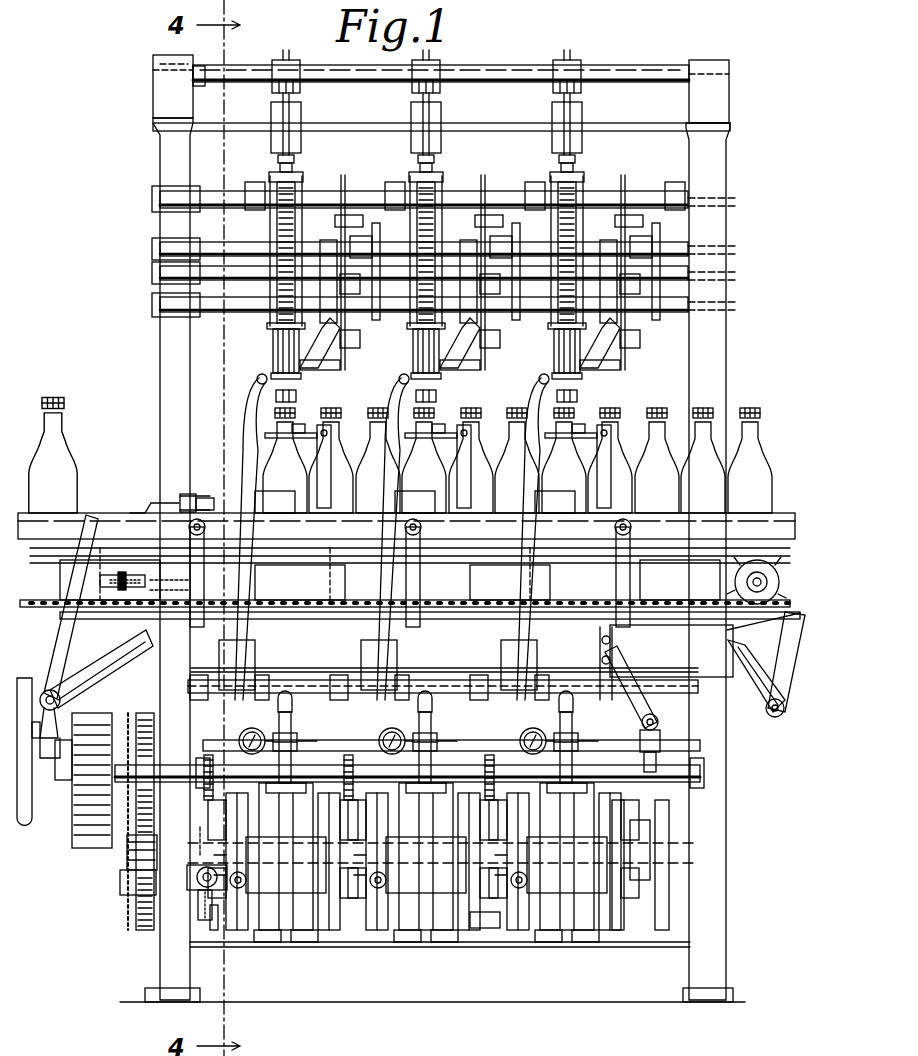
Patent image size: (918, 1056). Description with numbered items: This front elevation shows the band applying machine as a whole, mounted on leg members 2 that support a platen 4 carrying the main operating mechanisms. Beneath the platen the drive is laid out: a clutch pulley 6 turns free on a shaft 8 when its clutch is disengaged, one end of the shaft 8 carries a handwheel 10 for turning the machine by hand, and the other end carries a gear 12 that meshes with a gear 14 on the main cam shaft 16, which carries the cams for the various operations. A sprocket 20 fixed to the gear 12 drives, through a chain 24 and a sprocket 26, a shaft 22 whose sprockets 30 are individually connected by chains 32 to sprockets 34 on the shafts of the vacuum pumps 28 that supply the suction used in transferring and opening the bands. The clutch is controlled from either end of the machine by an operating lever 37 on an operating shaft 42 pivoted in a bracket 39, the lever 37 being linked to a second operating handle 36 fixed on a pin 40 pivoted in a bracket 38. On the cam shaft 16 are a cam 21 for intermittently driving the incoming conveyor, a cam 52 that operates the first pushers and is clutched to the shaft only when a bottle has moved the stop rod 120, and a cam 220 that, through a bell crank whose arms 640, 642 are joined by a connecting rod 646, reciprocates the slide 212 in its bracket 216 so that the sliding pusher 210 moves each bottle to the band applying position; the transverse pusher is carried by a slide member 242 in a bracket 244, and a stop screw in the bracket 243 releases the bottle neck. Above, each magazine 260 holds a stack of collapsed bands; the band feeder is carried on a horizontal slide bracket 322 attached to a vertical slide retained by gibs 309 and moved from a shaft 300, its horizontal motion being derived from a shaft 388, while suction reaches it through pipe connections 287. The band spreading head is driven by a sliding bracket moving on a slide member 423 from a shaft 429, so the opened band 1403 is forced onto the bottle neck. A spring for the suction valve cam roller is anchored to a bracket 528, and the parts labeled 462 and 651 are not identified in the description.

The leg members 2 is at (163, 965).
The platen 4 is at (271, 682).
The clutch pulley 6 is at (113, 869).
The shaft 8 is at (46, 764).
The handwheel 10 is at (22, 829).
The gear 12 is at (145, 748).
The gear 14 is at (134, 920).
The main cam shaft 16 is at (133, 886).
The sprocket 20 is at (144, 734).
The cam 21 is at (655, 937).
The shaft 22 is at (308, 744).
The chain 24 is at (120, 756).
The sprocket 26 is at (112, 831).
The vacuum pumps 28 is at (278, 954).
The sprockets 30 is at (240, 746).
The chains 32 is at (197, 828).
The sprockets 34 is at (204, 892).
The second operating handle 36 is at (754, 662).
The operating lever 37 is at (66, 592).
The bracket 38 is at (754, 710).
The bracket 39 is at (79, 724).
The pin 40 is at (769, 722).
The operating shaft 42 is at (34, 664).
The cam 52 is at (246, 932).
The movable rod 120 is at (148, 506).
The sliding pusher member 210 is at (252, 490).
The slide member 212 is at (466, 630).
The bracket 216 is at (266, 611).
The cam 220 is at (614, 944).
The slide member 242 is at (633, 542).
The bracket 243 is at (621, 424).
The bracket 244 is at (540, 566).
The magazine 260 is at (268, 231).
The pipe connections 287 is at (238, 440).
The shaft 300 is at (186, 196).
The gibs 309 is at (341, 191).
The horizontal slide bracket 322 is at (346, 362).
The shaft 388 is at (182, 310).
The slide member 423 is at (298, 119).
The shaft 429 is at (178, 278).
The shaft 462 is at (178, 250).
The bracket 528 is at (496, 944).
The arm of bell crank lever 640 is at (611, 677).
The arm of bell crank lever 642 is at (613, 697).
The connecting rod 646 is at (625, 595).
The top beam 651 is at (618, 70).
The band 1403 is at (58, 422).